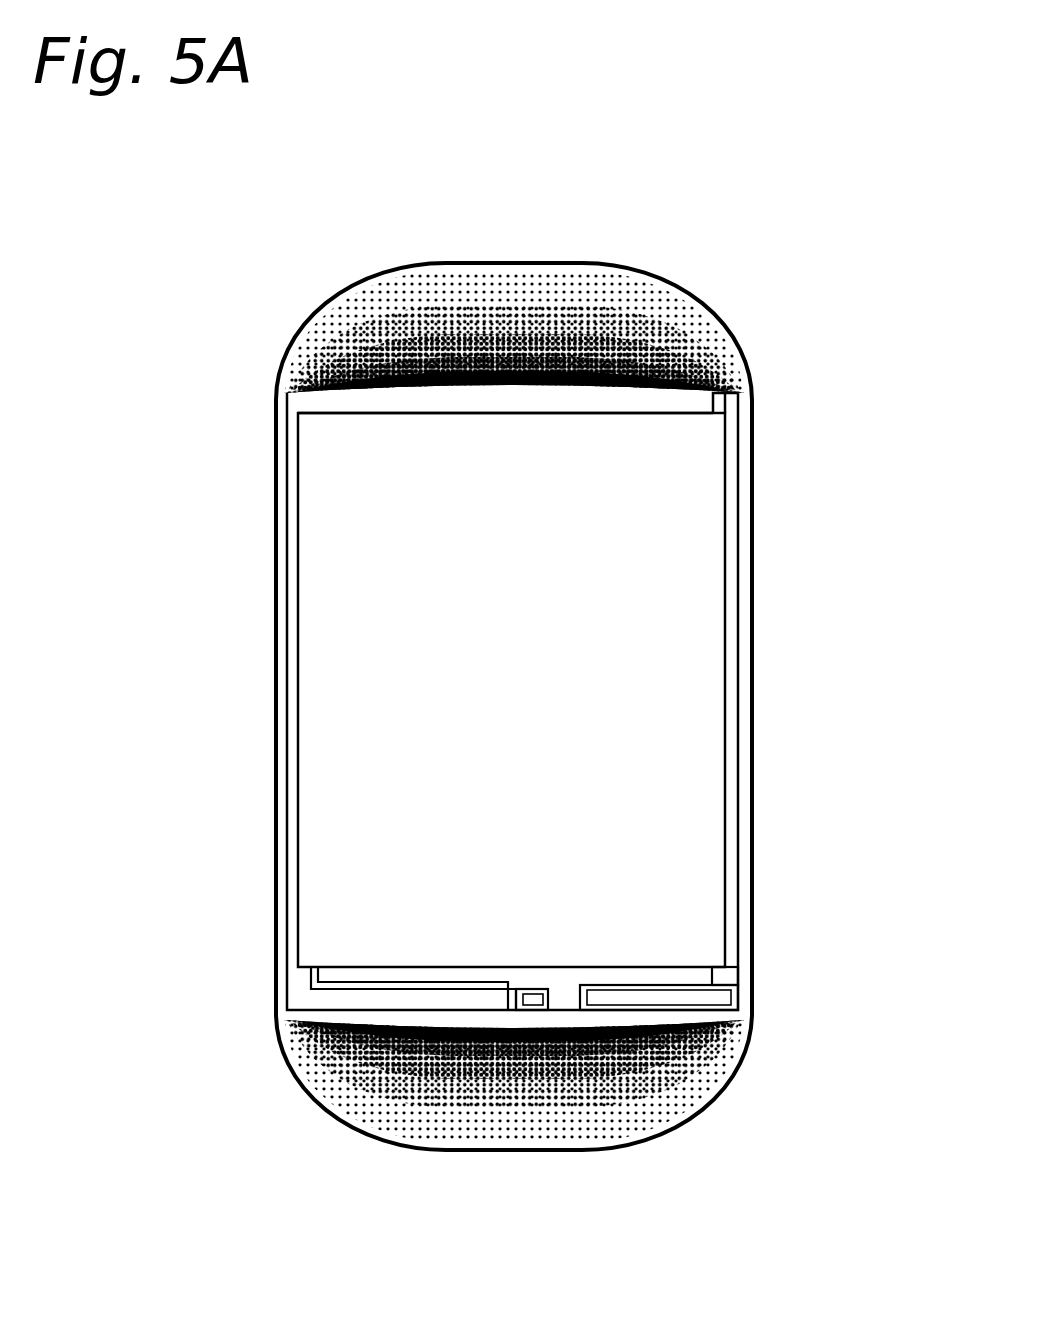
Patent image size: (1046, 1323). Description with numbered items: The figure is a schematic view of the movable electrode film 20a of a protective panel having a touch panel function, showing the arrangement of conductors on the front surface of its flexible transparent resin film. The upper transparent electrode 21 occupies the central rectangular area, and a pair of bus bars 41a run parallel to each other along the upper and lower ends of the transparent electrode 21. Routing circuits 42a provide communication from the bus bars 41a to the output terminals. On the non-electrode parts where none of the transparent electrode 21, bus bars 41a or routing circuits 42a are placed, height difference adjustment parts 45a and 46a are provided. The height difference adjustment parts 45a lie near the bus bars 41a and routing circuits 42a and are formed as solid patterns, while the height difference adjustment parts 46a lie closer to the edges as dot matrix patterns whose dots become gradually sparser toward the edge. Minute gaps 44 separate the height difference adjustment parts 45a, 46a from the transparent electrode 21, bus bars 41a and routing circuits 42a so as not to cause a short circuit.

The movable electrode film 20a is at (776, 273).
The upper transparent electrode 21 is at (540, 762).
The bus bars 41a is at (525, 413).
The routing circuits 42a is at (277, 650).
The minute gaps 44 is at (742, 403).
The height difference adjustment parts 45a is at (740, 678).
The height difference adjustment parts 46a is at (482, 318).